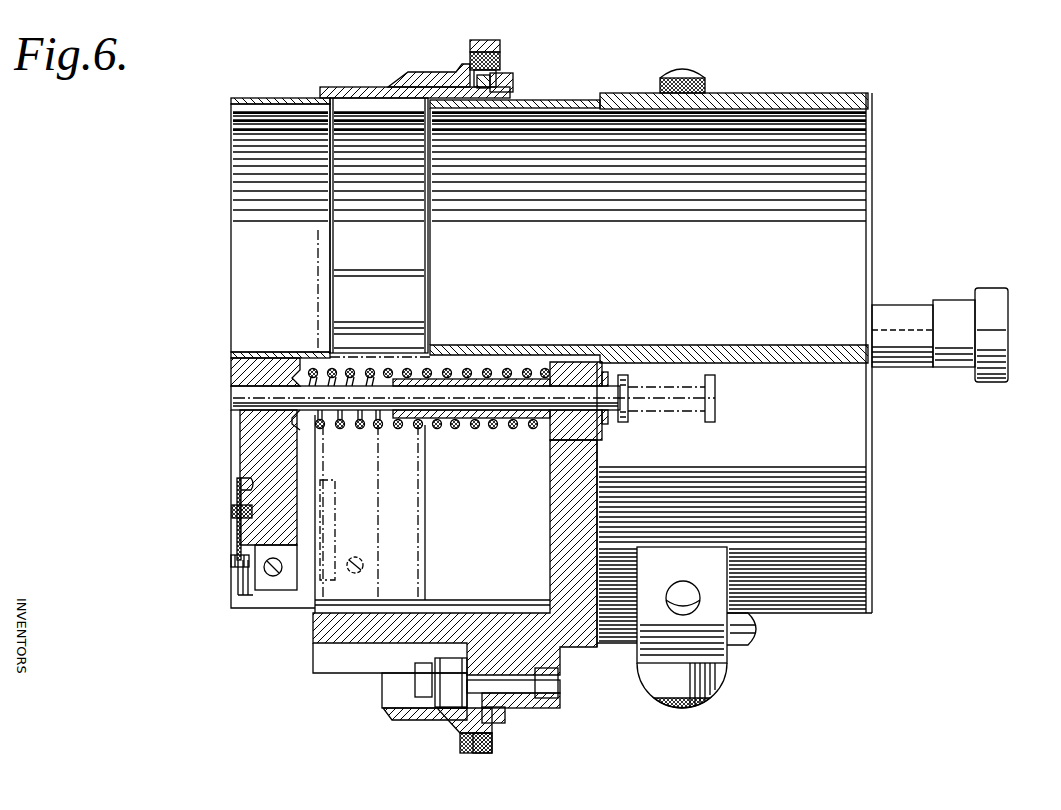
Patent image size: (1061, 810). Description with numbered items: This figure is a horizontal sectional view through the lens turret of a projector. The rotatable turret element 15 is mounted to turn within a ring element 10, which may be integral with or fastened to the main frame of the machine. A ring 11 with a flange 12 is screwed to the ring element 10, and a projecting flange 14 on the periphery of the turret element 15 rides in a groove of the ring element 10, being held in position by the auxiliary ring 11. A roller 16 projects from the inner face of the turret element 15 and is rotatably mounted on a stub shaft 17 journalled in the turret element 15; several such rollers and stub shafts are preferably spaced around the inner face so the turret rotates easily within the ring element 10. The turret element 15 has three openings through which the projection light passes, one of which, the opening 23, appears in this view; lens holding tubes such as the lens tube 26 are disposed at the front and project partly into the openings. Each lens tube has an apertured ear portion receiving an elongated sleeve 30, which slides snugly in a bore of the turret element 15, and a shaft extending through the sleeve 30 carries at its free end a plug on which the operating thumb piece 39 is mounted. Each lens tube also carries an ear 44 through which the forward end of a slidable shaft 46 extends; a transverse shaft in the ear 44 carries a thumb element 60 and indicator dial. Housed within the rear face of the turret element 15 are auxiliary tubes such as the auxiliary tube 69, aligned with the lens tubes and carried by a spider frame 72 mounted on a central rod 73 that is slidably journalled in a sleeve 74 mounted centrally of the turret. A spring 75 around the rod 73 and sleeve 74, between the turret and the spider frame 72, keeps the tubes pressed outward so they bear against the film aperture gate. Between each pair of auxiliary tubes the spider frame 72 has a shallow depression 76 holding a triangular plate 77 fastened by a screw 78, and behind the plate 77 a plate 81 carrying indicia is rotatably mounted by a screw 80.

The ring element 10 is at (420, 72).
The ring 11 is at (499, 55).
The flange 12 is at (514, 80).
The projecting flange 14 is at (500, 80).
The turret element 15 is at (367, 87).
The roller 16 is at (429, 718).
The stub shaft 17 is at (522, 702).
The opening 23 is at (380, 227).
The lens holding tube 26 is at (683, 348).
The elongated sleeve 30 is at (893, 318).
The operating thumb piece 39 is at (985, 296).
The ear 44 is at (728, 658).
The shaft 46 is at (760, 631).
The thumb element 60 is at (683, 712).
The auxiliary tube 69 is at (280, 98).
The spider frame 72 is at (255, 452).
The central rod 73 is at (513, 393).
The sleeve 74 is at (476, 370).
The spring 75 is at (527, 372).
The shallow depression 76 is at (242, 482).
The triangular plate 77 is at (237, 535).
The screw 78 is at (232, 514).
The screw 80 is at (232, 572).
The plate 81 is at (236, 560).